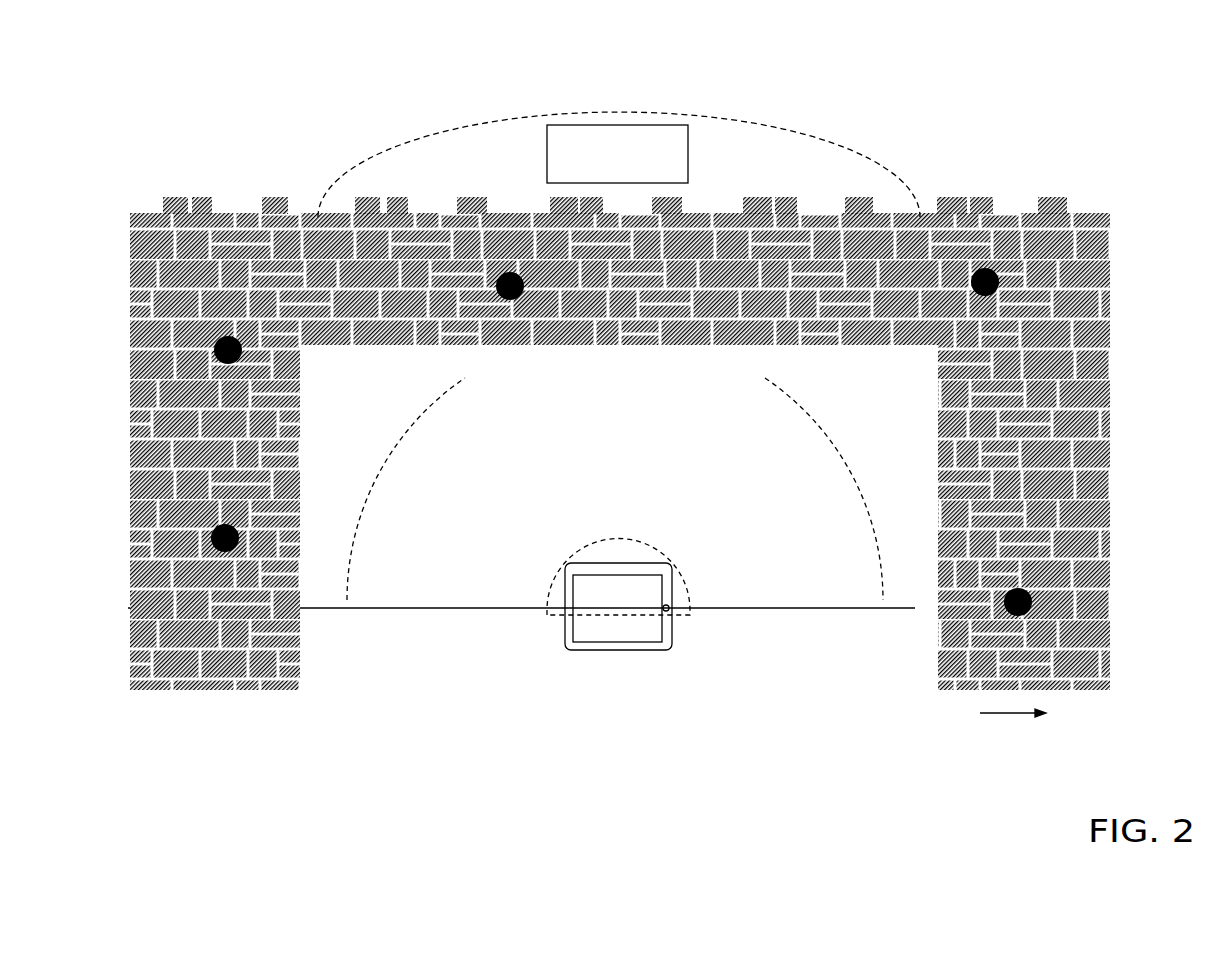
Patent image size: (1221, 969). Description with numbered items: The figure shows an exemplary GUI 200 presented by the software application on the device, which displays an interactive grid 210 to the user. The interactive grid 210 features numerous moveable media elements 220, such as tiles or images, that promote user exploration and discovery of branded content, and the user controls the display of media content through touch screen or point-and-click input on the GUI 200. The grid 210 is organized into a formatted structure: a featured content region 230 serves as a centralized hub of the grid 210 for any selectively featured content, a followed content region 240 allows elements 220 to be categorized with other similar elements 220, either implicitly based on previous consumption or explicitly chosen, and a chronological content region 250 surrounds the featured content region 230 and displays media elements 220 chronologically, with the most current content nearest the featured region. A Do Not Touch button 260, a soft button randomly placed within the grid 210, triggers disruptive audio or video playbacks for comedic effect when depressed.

The graphical user interface 200 is at (308, 33).
The interactive grid 210 is at (620, 417).
The media elements 220 is at (168, 670).
The featured content region 230 is at (566, 617).
The followed content region 240 is at (717, 588).
The chronological content region 250 is at (722, 182).
The Do Not Touch button 260 is at (978, 268).